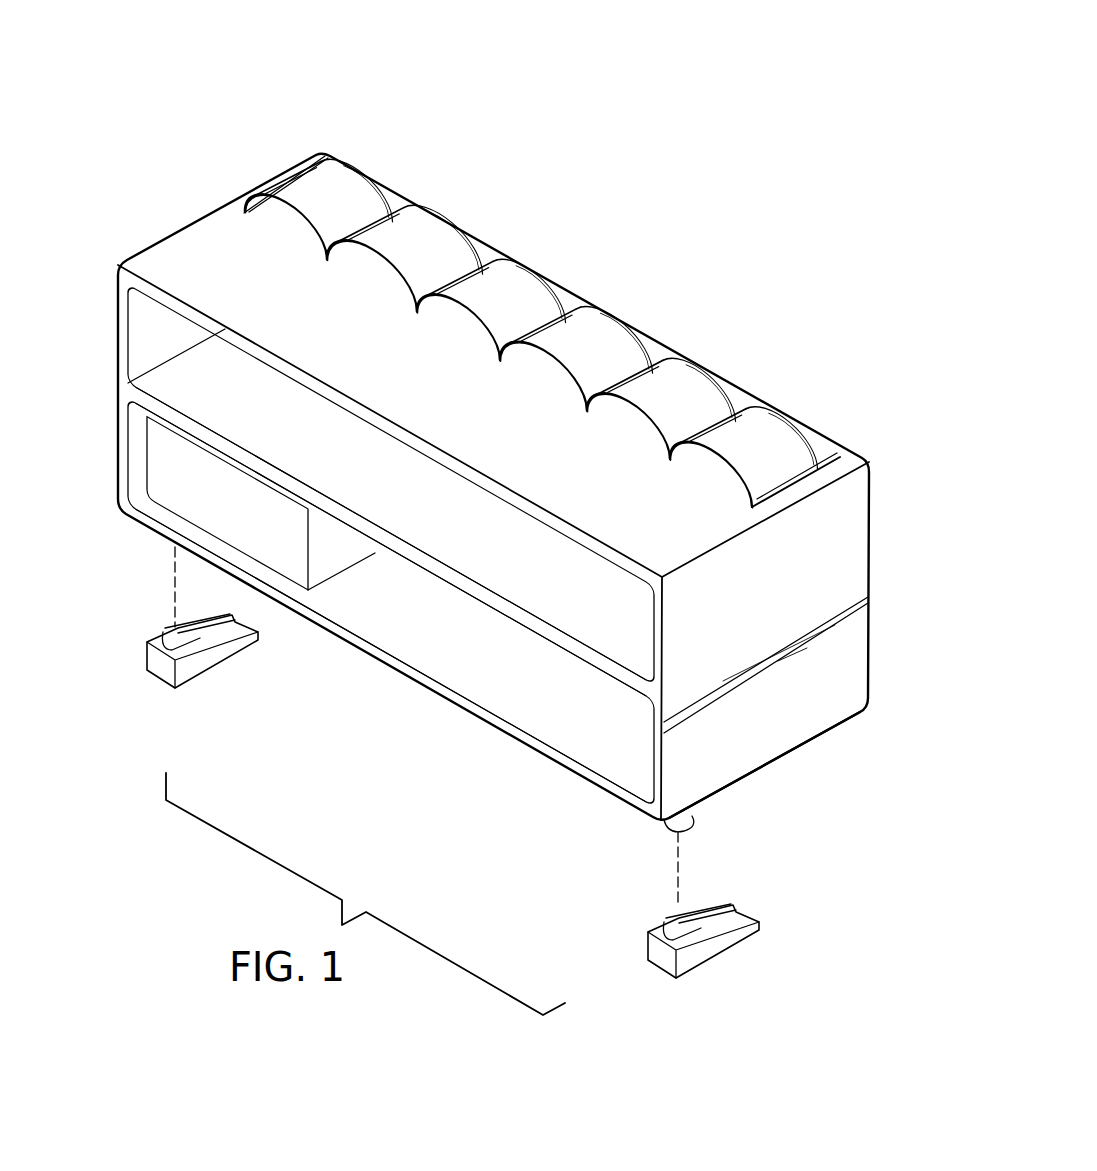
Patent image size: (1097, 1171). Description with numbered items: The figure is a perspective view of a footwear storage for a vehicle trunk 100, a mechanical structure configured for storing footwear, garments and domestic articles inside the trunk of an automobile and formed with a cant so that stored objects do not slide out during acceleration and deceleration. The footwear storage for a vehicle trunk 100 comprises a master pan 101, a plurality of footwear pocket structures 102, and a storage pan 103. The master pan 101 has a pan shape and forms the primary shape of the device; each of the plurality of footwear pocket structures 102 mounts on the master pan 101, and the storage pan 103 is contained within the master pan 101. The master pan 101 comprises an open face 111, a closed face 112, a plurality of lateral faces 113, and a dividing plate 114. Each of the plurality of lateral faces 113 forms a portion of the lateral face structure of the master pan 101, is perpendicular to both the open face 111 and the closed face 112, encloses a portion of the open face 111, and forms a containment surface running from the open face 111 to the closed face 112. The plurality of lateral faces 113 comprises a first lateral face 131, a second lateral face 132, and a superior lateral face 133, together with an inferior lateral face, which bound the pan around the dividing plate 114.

The footwear storage for a vehicle trunk 100 is at (222, 101).
The master pan 101 is at (788, 755).
The footwear pocket structures 102 is at (613, 337).
The storage pan 103 is at (187, 483).
The open face 111 is at (488, 667).
The closed face 112 is at (872, 582).
The plurality of lateral faces 113 is at (773, 0).
The dividing plate 114 is at (368, 490).
The first lateral face 131 is at (115, 333).
The second lateral face 132 is at (723, 760).
The superior lateral face 133 is at (202, 237).